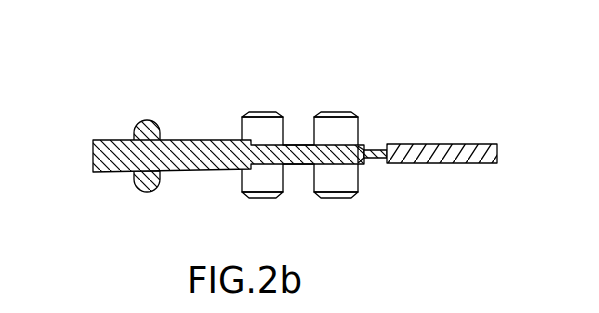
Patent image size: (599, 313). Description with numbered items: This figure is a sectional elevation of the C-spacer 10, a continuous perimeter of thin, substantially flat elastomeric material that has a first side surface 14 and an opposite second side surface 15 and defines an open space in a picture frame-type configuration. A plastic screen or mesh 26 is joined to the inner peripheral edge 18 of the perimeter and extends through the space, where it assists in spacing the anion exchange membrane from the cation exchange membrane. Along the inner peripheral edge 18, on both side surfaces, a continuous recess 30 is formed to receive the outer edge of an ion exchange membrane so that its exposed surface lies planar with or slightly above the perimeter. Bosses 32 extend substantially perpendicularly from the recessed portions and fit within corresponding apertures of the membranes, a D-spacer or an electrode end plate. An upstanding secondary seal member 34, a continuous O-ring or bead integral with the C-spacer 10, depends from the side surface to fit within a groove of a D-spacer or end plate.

The C-spacer 10 is at (121, 203).
The first side surface 14 is at (208, 139).
The second side surface 15 is at (202, 172).
The inner peripheral edge 18 is at (364, 148).
The mesh 26 is at (445, 163).
The recess 30 is at (298, 165).
The bosses 32 is at (262, 112).
The secondary seal member 34 is at (150, 120).